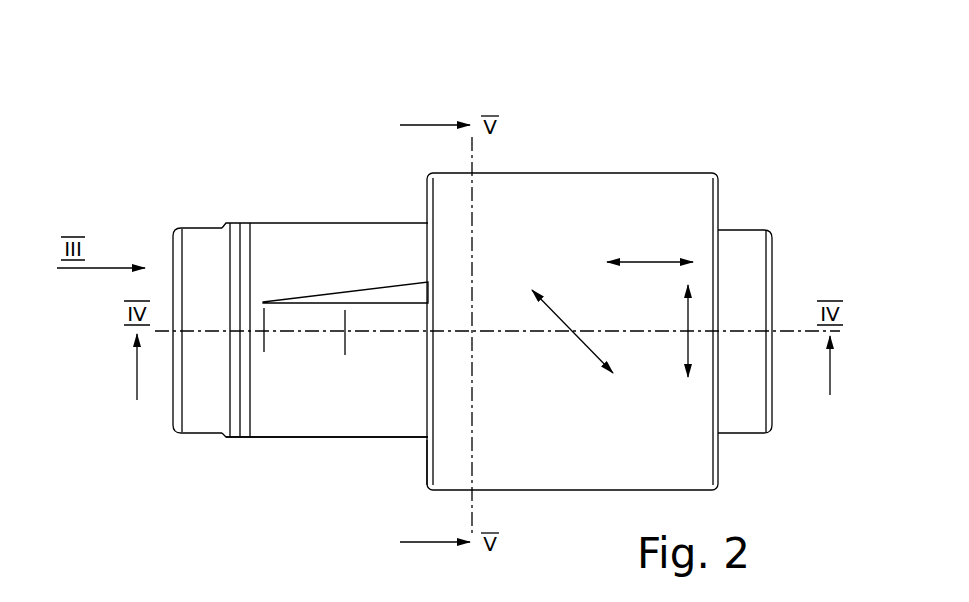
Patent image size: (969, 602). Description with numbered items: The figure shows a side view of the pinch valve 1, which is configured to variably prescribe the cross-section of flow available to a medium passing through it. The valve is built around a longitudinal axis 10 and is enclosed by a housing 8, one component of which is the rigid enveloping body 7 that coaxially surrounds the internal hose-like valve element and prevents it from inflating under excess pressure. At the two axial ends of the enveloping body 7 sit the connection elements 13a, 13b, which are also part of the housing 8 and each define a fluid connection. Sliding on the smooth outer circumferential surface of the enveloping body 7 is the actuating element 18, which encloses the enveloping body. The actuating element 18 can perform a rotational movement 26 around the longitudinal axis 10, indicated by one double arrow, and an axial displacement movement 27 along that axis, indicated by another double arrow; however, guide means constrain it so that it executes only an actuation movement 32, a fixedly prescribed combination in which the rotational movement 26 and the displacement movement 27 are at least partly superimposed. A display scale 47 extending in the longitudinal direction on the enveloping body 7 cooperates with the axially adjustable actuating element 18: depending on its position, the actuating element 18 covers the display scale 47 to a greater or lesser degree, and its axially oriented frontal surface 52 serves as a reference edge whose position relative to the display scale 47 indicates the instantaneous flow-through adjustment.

The pinch valve 1 is at (718, 133).
The enveloping body 7 is at (300, 240).
The housing 8 is at (302, 430).
The longitudinal axis 10 is at (788, 330).
The connection element 13a is at (198, 242).
The connection element 13b is at (747, 240).
The actuating element 18 is at (580, 195).
The rotational movement 26 is at (688, 338).
The axial displacement movement 27 is at (652, 260).
The actuation movement 32 is at (582, 342).
The display scale 47 is at (365, 297).
The frontal surface 52 is at (423, 460).